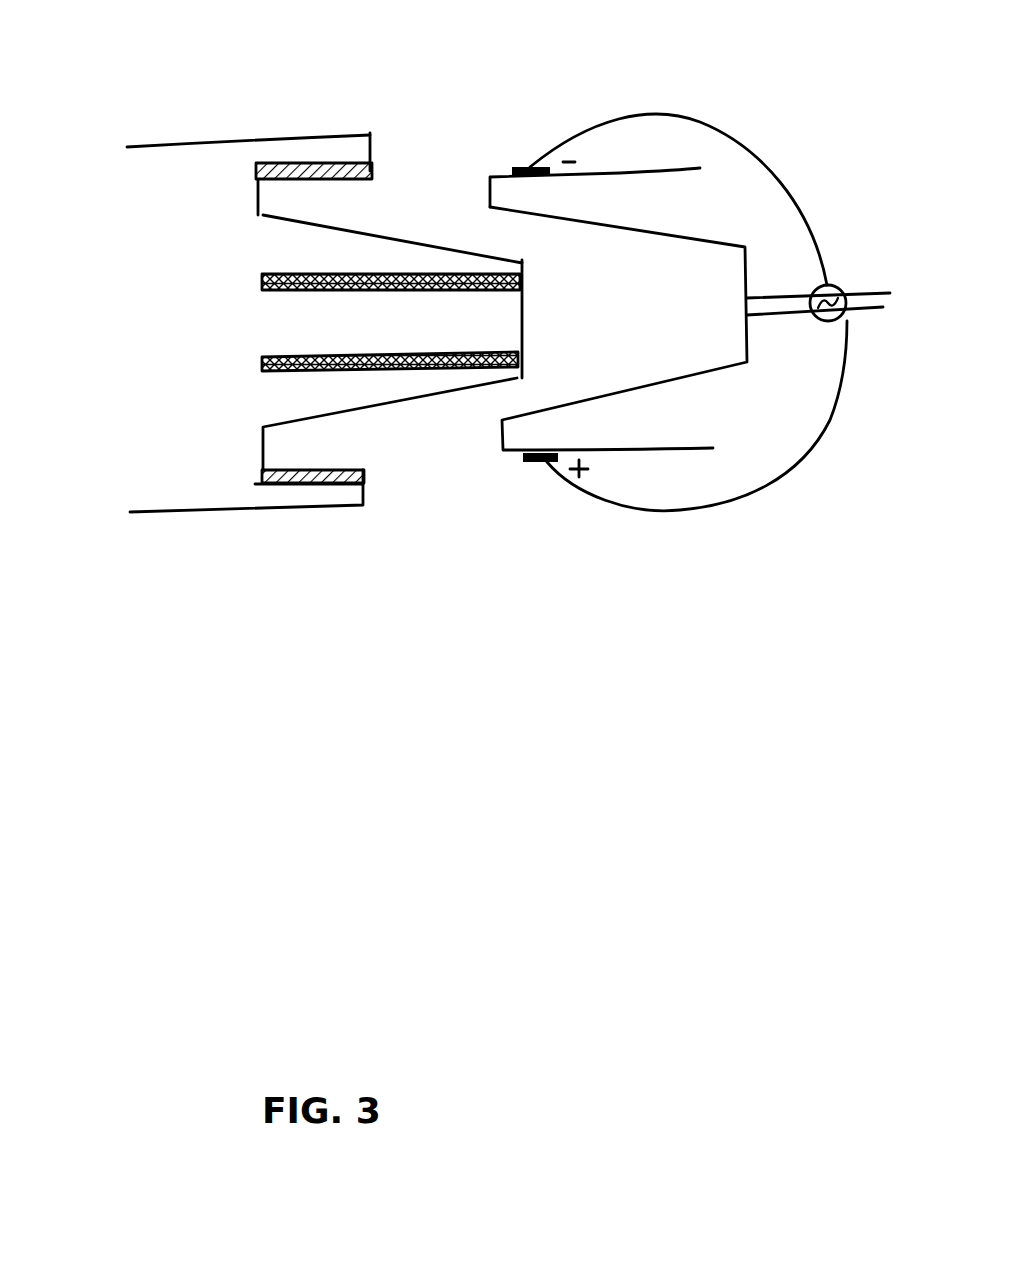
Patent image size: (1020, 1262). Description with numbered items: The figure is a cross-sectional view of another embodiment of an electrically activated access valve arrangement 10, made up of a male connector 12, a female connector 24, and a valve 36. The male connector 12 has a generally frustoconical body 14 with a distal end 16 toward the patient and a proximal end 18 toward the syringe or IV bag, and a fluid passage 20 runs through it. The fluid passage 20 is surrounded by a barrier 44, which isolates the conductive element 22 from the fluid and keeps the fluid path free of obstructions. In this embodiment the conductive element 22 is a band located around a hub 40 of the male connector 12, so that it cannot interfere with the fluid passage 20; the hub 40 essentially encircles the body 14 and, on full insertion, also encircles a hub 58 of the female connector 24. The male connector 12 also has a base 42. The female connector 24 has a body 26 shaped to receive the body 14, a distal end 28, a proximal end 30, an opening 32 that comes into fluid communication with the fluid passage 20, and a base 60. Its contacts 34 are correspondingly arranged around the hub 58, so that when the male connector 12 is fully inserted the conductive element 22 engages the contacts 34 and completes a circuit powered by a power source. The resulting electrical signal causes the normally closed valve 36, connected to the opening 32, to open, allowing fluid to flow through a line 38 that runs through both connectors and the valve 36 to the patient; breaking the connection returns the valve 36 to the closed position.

The electrically activated access valve arrangement 10 is at (72, 67).
The male connector 12 is at (154, 160).
The body 14 is at (287, 232).
The distal end 16 is at (520, 262).
The proximal end 18 is at (155, 443).
The fluid passage 20 is at (433, 340).
The conductive element 22 is at (305, 470).
The female connector 24 is at (655, 240).
The body 26 is at (577, 233).
The distal end 28 is at (747, 343).
The proximal end 30 is at (525, 223).
The opening 32 is at (750, 292).
The contacts 34 is at (528, 168).
The valve 36 is at (829, 285).
The line 38 is at (875, 292).
The hub 40 is at (335, 503).
The base 42 is at (260, 448).
The barrier 44 is at (370, 365).
The hub 58 is at (640, 457).
The base 60 is at (502, 420).